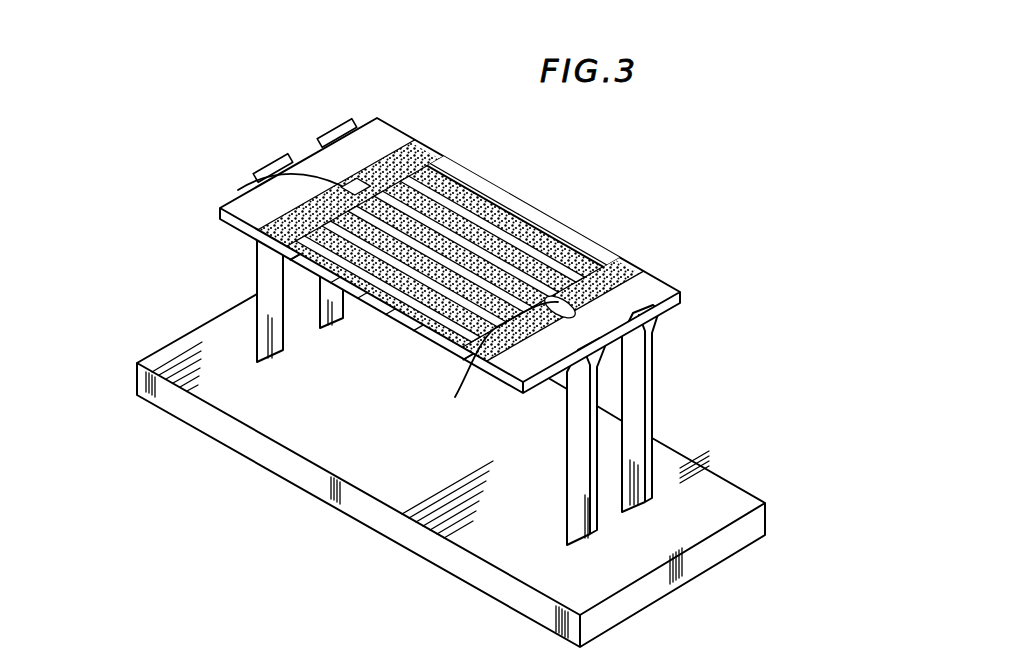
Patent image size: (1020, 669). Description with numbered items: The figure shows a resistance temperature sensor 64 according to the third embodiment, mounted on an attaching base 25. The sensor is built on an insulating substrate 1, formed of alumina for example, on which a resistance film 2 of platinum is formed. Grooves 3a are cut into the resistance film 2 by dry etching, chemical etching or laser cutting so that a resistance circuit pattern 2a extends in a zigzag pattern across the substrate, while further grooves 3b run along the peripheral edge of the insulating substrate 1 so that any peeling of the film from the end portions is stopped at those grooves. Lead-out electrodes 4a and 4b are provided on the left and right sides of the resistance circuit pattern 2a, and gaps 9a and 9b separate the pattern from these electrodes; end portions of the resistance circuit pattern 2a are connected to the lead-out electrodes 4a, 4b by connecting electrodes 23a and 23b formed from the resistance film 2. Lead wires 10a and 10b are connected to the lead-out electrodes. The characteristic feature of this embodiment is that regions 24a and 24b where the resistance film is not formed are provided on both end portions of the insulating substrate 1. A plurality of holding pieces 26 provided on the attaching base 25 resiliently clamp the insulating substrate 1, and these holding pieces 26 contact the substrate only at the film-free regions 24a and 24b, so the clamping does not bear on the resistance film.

The insulating substrate 1 is at (687, 299).
The resistance film 2 is at (504, 212).
The resistance circuit pattern 2a is at (394, 314).
The grooves 3a is at (340, 283).
The grooves 3b is at (548, 212).
The lead-out electrode 4a is at (405, 141).
The lead-out electrode 4b is at (647, 270).
The gap 9a is at (443, 168).
The gap 9b is at (582, 260).
The lead wire 10a is at (228, 232).
The lead wire 10b is at (455, 397).
The connecting electrode 23a is at (299, 262).
The connecting electrode 23b is at (477, 362).
The region where the resistance film is not formed 24a is at (377, 140).
The region where the resistance film is not formed 24b is at (658, 292).
The attaching base 25 is at (724, 484).
The holding pieces 26 is at (340, 127).
The resistance temperature sensor 64 is at (645, 188).